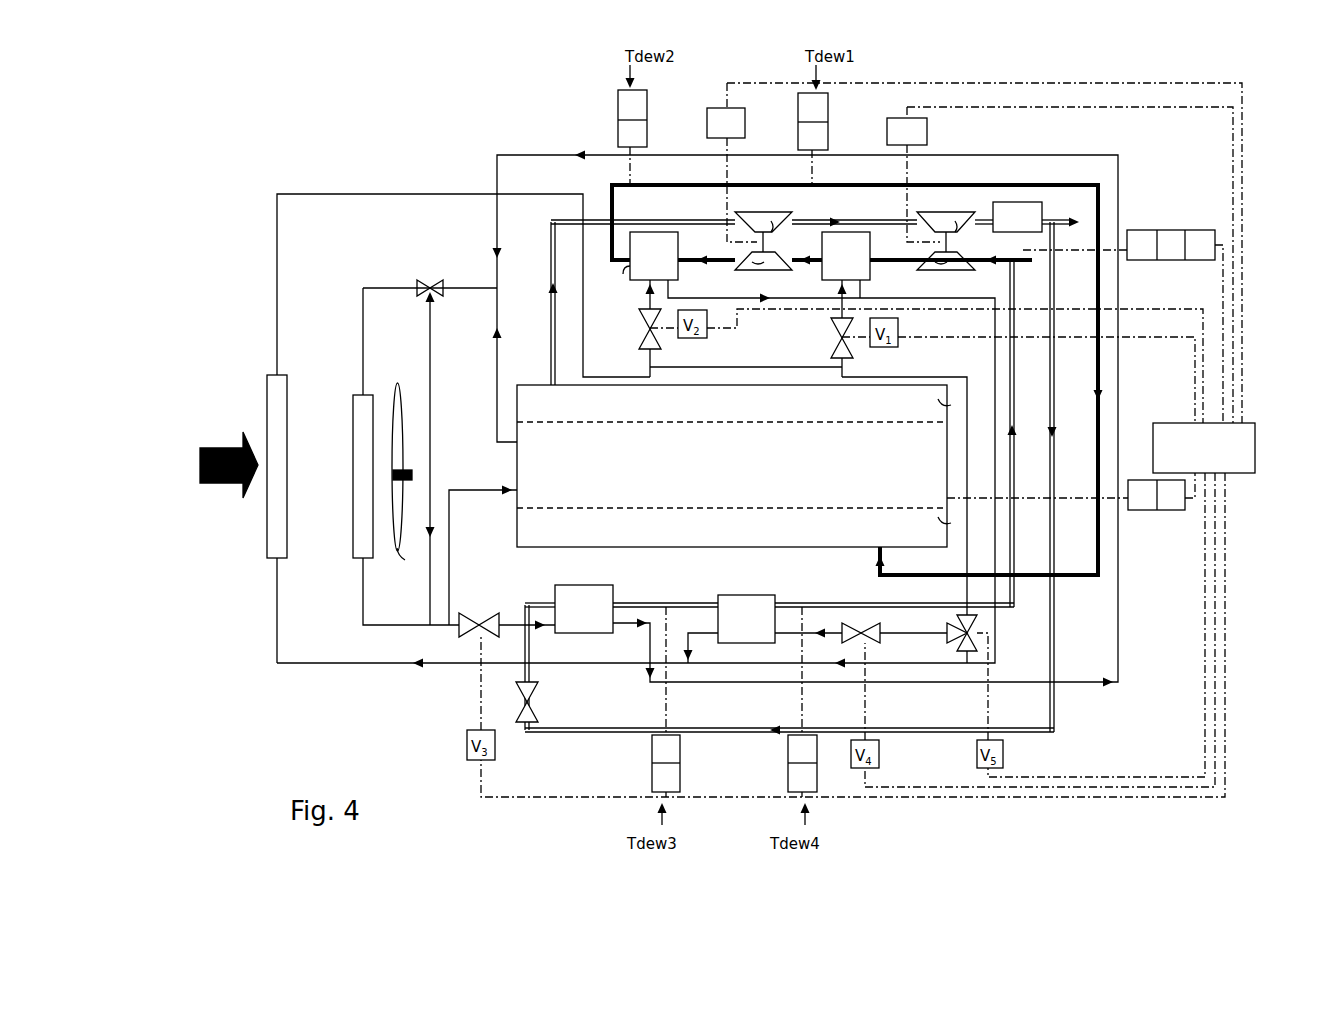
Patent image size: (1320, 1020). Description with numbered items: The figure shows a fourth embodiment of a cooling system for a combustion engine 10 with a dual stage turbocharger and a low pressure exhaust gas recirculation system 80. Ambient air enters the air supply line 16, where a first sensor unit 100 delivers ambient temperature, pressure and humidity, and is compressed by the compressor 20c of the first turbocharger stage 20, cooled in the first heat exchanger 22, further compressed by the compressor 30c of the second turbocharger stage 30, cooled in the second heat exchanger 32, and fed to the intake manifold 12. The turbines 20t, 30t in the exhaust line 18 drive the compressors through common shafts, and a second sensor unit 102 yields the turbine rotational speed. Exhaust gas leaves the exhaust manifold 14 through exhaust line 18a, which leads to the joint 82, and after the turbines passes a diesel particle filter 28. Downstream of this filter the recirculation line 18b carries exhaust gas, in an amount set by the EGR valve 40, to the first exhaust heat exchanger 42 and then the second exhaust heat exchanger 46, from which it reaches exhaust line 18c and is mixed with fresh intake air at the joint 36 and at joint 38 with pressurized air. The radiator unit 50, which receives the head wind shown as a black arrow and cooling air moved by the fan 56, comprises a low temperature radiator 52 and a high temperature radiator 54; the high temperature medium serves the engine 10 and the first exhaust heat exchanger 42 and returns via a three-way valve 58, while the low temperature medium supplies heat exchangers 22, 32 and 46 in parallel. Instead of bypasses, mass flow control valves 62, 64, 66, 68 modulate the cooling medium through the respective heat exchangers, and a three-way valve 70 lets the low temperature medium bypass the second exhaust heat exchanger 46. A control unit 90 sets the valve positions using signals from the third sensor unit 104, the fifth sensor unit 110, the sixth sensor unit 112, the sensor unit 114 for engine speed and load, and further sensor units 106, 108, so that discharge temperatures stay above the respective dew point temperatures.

The combustion engine 10 is at (732, 466).
The intake manifold 12 is at (963, 527).
The exhaust manifold 14 is at (963, 407).
The air supply line 16 is at (1028, 263).
The exhaust line 18 is at (1063, 224).
The exhaust line 18a is at (551, 357).
The recirculation line 18b is at (1054, 400).
The exhaust line 18c is at (1016, 400).
The first turbocharger stage 20 is at (946, 254).
The compressor 20c is at (960, 276).
The turbine 20t is at (952, 232).
The first heat exchanger 22 is at (846, 256).
The diesel particle filter 28 is at (993, 210).
The second turbocharger stage 30 is at (764, 254).
The compressor 30c is at (748, 274).
The turbine 30t is at (771, 232).
The second heat exchanger 32 is at (654, 256).
The joint 36 is at (617, 283).
The joint 38 is at (1020, 254).
The EGR valve 40 is at (544, 698).
The first exhaust heat exchanger 42 is at (584, 609).
The second exhaust heat exchanger 46 is at (746, 619).
The radiator unit 50 is at (254, 379).
The low temperature radiator 52 is at (288, 382).
The high temperature radiator 54 is at (353, 519).
The fan 56 is at (402, 485).
The 3-way valve 58 is at (427, 280).
The first control valve 62 is at (834, 350).
The control valve 64 is at (638, 333).
The control valve 66 is at (484, 634).
The control valve 68 is at (873, 644).
The valve 70 is at (957, 630).
The exhaust gas recirculation system 80 is at (1068, 627).
The joint 82 is at (1055, 232).
The control unit 90 is at (1153, 424).
The first sensor unit 100 is at (1157, 230).
The second sensor unit 102 is at (927, 125).
The third sensor unit 104 is at (798, 102).
The turbocharger speed sensor 106 is at (707, 127).
The temperature and pressure sensor 108 is at (618, 127).
The fifth sensor unit 110 is at (652, 759).
The sixth sensor unit 112 is at (788, 762).
The sensor unit 114 is at (1147, 511).